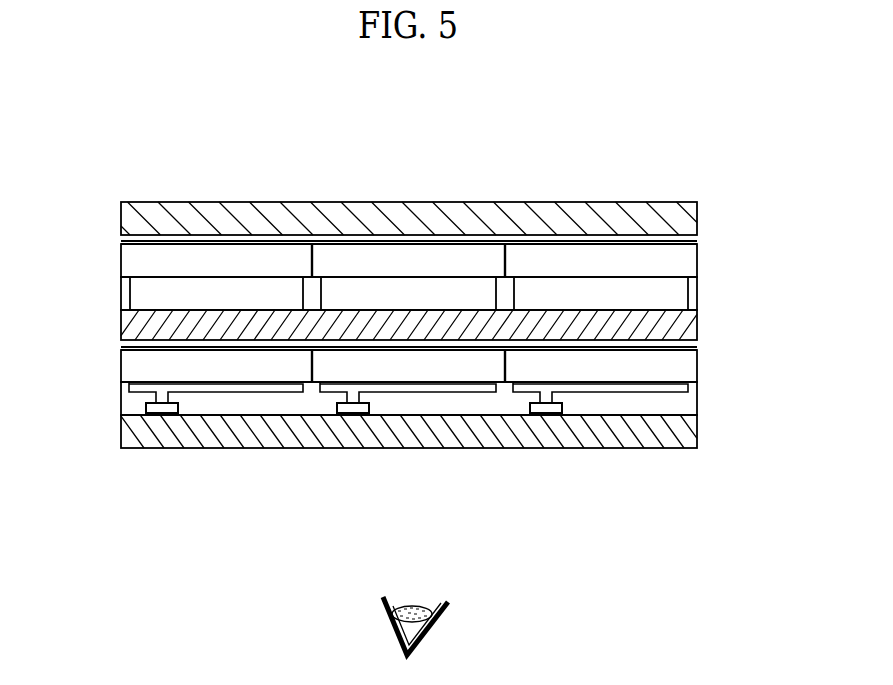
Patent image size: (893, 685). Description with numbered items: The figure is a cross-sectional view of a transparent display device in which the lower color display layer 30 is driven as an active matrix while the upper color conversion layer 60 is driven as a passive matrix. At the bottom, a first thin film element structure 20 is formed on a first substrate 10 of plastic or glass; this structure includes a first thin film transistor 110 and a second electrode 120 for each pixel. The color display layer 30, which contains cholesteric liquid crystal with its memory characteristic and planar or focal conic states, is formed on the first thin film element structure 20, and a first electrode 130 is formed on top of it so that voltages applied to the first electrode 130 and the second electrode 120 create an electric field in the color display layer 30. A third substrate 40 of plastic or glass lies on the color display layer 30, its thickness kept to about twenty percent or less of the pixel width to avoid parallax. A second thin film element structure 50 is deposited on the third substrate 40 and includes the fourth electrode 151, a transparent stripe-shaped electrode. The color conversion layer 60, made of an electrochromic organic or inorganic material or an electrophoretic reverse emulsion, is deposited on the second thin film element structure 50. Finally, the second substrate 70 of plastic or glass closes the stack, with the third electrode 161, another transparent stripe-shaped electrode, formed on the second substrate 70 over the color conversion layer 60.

The first substrate 10 is at (683, 438).
The first thin film element structure 20 is at (398, 438).
The color display layer 30 is at (683, 370).
The third substrate 40 is at (683, 331).
The second thin film element structure 50 is at (700, 278).
The color conversion layer 60 is at (683, 262).
The second substrate 70 is at (683, 219).
The first thin film transistor 110 is at (147, 408).
The second electrode 120 is at (254, 389).
The first electrode 130 is at (123, 347).
The fourth electrode 151 is at (262, 293).
The third electrode 161 is at (123, 241).